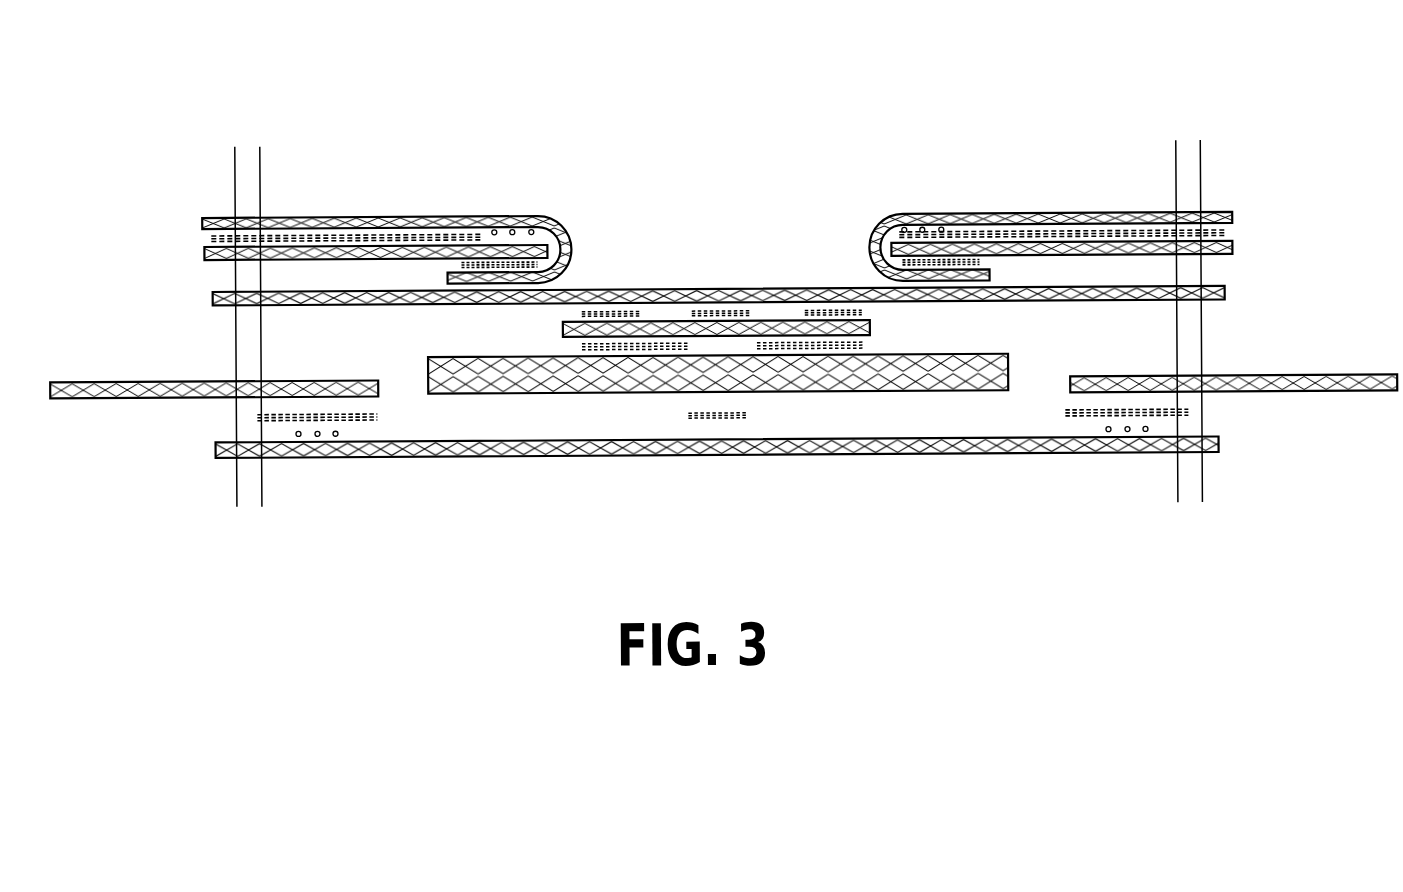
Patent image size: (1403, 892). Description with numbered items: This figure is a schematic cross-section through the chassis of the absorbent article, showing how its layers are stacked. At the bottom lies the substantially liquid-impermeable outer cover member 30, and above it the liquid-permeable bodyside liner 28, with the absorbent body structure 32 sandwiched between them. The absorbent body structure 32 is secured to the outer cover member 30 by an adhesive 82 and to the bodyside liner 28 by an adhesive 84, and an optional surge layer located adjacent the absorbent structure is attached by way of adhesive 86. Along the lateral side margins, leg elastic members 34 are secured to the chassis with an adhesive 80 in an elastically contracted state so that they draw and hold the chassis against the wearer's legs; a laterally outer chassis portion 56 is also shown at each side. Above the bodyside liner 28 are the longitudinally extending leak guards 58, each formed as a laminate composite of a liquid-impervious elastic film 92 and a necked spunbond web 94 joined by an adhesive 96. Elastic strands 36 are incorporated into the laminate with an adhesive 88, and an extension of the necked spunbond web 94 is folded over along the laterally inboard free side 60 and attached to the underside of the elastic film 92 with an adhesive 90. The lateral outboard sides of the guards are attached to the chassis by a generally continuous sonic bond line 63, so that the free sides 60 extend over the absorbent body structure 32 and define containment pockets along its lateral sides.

The bodyside liner 28 is at (762, 288).
The outer cover member 30 is at (950, 457).
The absorbent body structure 32 is at (485, 368).
The leg elastic members 34 is at (340, 434).
The elastic strands 36 is at (527, 222).
The side panel 56 is at (165, 395).
The leak guards 58 is at (330, 185).
The free side 60 is at (870, 252).
The sonic bond line 63 is at (1232, 239).
The adhesive 80 is at (273, 420).
The adhesive 82 is at (740, 419).
The adhesive 84 is at (628, 306).
The adhesive 86 is at (866, 346).
The adhesive 88 is at (955, 216).
The adhesive 90 is at (568, 255).
The elastic film 92 is at (297, 257).
The necked spunbond web 94 is at (220, 212).
The adhesive 96 is at (422, 221).